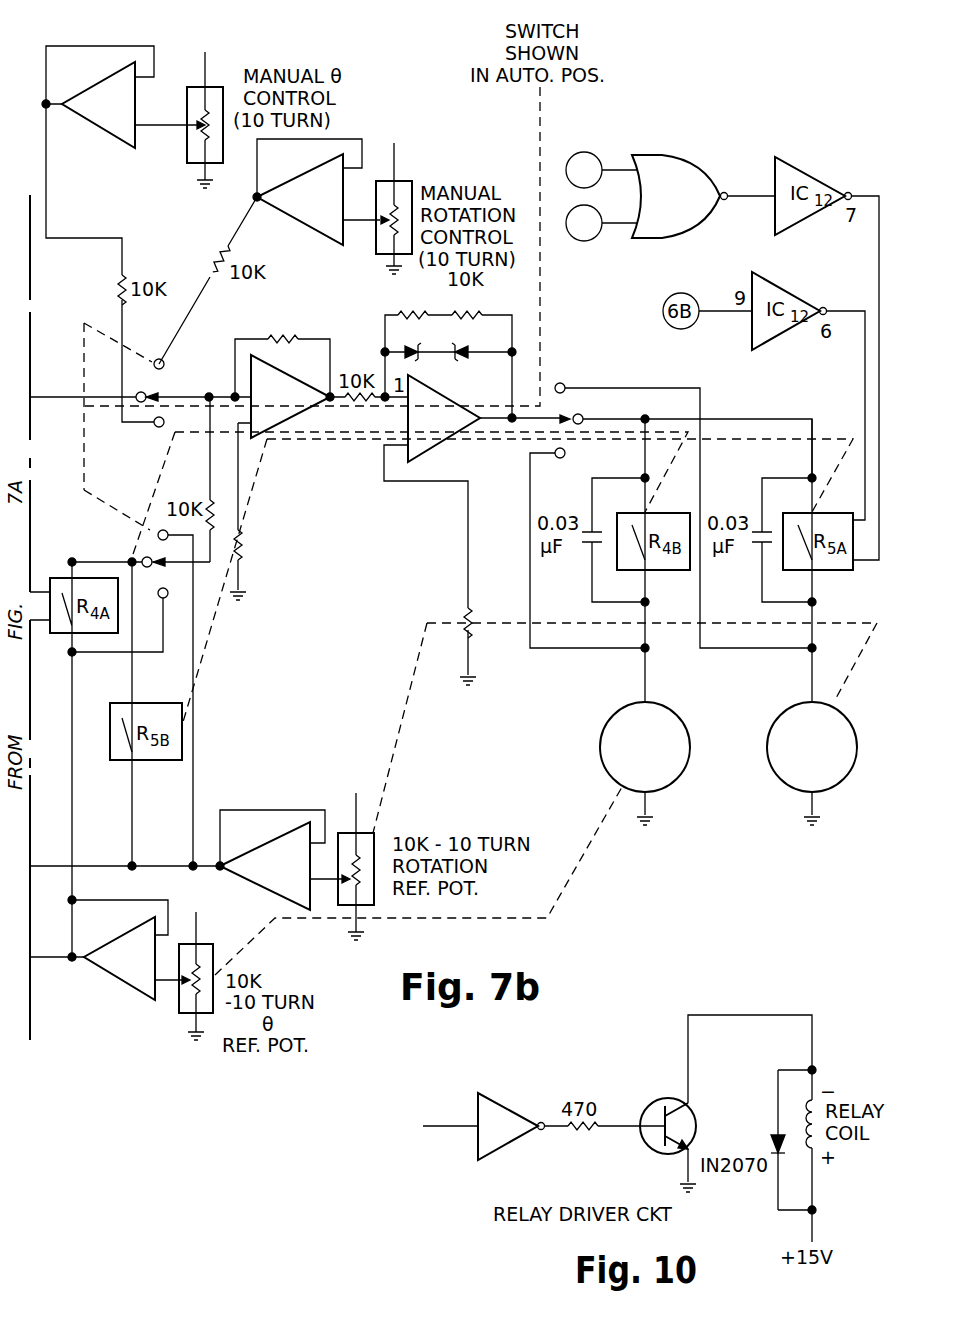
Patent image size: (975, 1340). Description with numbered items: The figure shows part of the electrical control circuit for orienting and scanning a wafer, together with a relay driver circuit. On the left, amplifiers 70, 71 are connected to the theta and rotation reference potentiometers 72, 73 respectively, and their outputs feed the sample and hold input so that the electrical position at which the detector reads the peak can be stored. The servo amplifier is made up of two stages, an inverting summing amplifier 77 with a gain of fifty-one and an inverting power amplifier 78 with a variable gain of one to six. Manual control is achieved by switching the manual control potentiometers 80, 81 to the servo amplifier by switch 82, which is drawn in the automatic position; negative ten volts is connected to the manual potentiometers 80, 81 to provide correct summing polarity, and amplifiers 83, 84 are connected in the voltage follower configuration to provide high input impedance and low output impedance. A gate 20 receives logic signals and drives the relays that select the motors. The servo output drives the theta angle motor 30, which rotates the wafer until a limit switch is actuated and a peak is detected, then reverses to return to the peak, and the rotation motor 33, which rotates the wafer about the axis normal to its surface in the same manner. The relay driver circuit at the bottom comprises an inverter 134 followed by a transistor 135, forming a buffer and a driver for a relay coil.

In FIG. 7B, the amplifier 83 is at (90, 80).
In FIG. 7B, the manual control potentiometer 80 is at (215, 87).
In FIG. 7B, the amplifier 84 is at (340, 155).
In FIG. 7B, the manual control potentiometer 81 is at (407, 181).
In FIG. 7B, the switch 82 is at (172, 396).
In FIG. 7B, the inverting summing amplifier 77 is at (285, 420).
In FIG. 7B, the inverting power amplifier 78 is at (447, 432).
In FIG. 7B, the OR gate IC11 20 is at (672, 155).
In FIG. 7B, the theta angle motor 30 is at (663, 707).
In FIG. 7B, the motor 33 is at (835, 707).
In FIG. 7B, the amplifier 71 is at (267, 847).
In FIG. 7B, the rotation reference potentiometer 73 is at (375, 895).
In FIG. 7B, the amplifier 70 is at (122, 988).
In FIG. 7B, the theta reference potentiometer 72 is at (183, 1015).
In FIG. 10, the inverter 134 is at (493, 1100).
In FIG. 10, the transistor 135 is at (672, 1098).